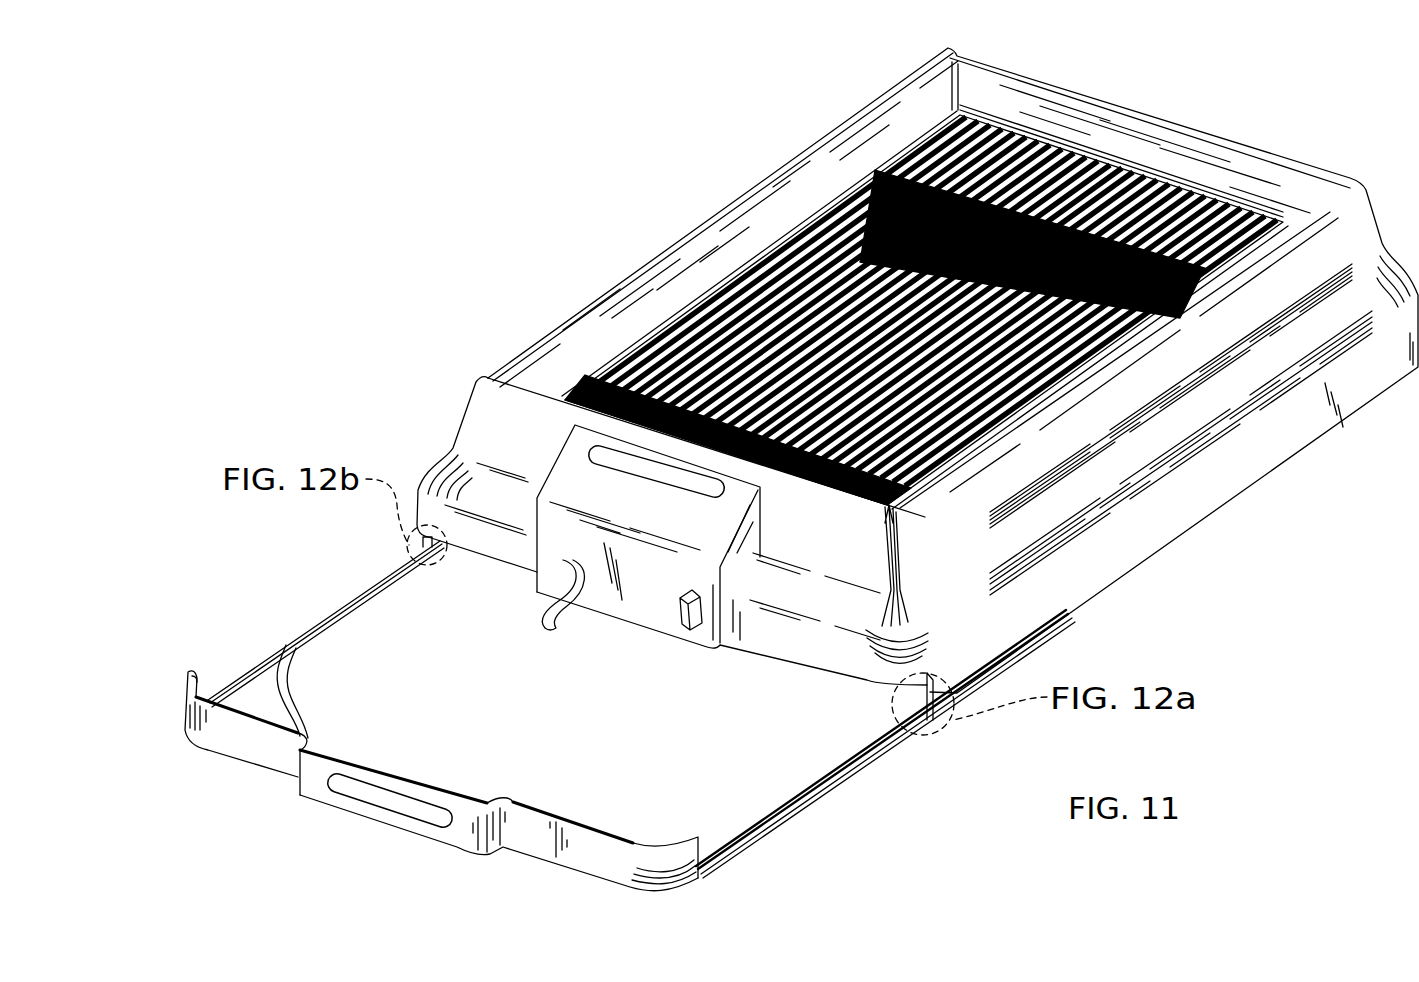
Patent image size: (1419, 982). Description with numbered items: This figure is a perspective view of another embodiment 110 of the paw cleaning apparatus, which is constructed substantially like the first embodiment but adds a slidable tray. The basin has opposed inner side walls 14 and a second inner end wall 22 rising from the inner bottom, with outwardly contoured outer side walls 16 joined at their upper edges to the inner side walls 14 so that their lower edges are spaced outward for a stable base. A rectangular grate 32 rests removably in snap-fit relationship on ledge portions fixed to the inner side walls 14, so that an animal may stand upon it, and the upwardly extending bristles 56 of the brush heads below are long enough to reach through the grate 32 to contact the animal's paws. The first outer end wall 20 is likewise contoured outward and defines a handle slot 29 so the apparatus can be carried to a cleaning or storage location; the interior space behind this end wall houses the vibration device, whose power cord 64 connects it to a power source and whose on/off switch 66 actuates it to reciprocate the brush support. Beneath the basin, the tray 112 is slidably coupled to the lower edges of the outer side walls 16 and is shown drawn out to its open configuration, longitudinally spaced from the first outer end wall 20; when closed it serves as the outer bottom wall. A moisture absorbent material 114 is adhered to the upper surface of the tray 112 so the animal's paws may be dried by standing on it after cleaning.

The embodiment of the paw cleaning apparatus 110 is at (672, 184).
The inner side walls 14 is at (563, 379).
The second inner end wall 22 is at (1260, 199).
The outer side walls 16 is at (1186, 527).
The grate 32 is at (770, 263).
The bristles 56 is at (880, 173).
The first outer end wall 20 is at (823, 536).
The handle slot 29 is at (637, 483).
The on/off switch 66 is at (567, 566).
The power cord 64 is at (686, 592).
The tray 112 is at (286, 632).
The moisture absorbent material 114 is at (295, 687).